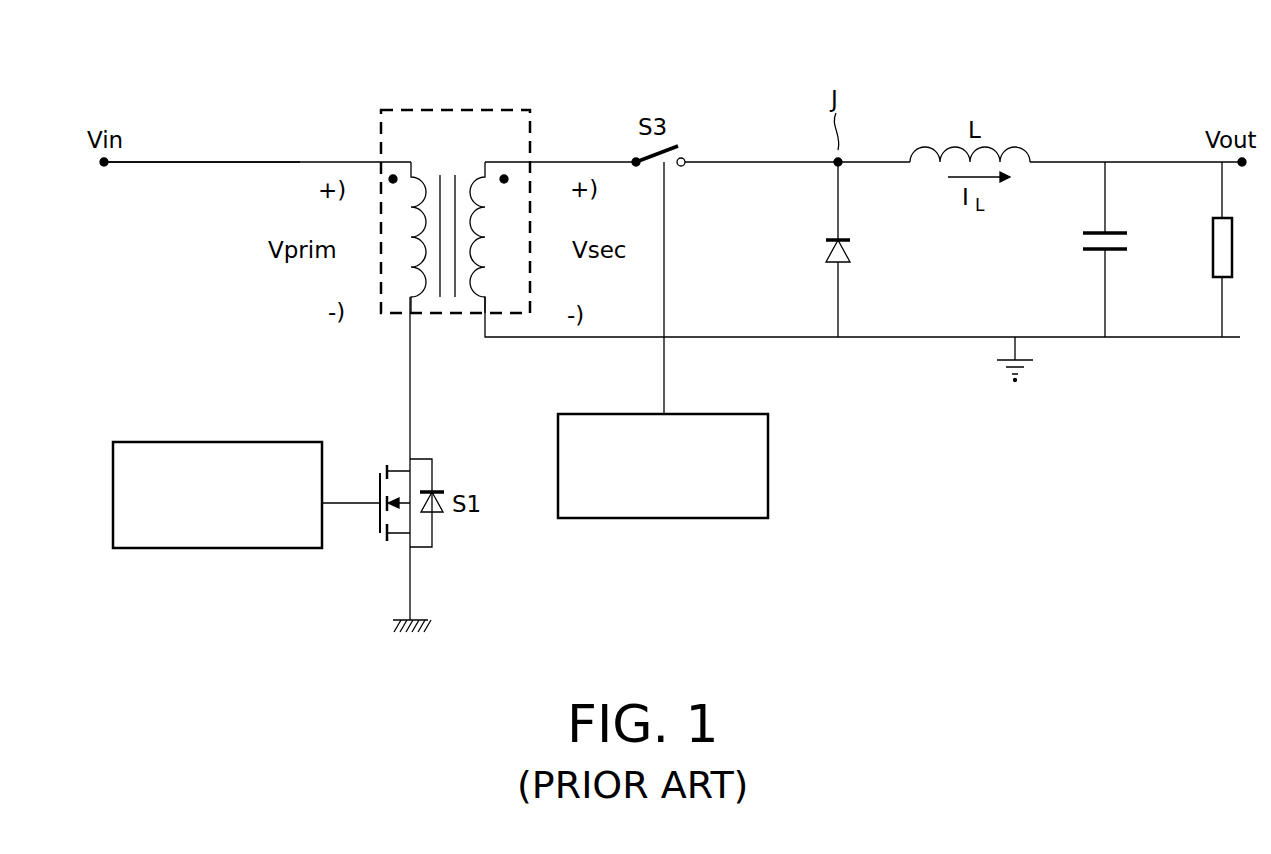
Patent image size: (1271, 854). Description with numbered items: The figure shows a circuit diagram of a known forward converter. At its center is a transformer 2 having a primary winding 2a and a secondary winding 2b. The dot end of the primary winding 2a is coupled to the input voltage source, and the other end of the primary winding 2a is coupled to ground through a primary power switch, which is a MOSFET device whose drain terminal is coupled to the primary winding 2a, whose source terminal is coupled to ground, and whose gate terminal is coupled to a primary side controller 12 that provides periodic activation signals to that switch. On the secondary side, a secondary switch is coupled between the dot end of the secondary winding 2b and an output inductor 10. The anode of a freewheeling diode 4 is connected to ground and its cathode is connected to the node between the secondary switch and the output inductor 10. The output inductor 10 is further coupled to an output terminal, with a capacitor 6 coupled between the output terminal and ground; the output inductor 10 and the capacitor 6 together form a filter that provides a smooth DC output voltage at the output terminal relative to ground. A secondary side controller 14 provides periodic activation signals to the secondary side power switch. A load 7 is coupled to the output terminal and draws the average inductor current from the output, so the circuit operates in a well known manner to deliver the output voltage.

The transformer 2 is at (452, 108).
The primary winding 2a is at (423, 177).
The secondary winding 2b is at (472, 177).
The freewheeling diode 4 is at (850, 252).
The capacitor 6 is at (1090, 253).
The load 7 is at (1212, 242).
The output inductor 10 is at (152, 163).
The primary side controller 12 is at (217, 442).
The secondary side controller 14 is at (768, 467).